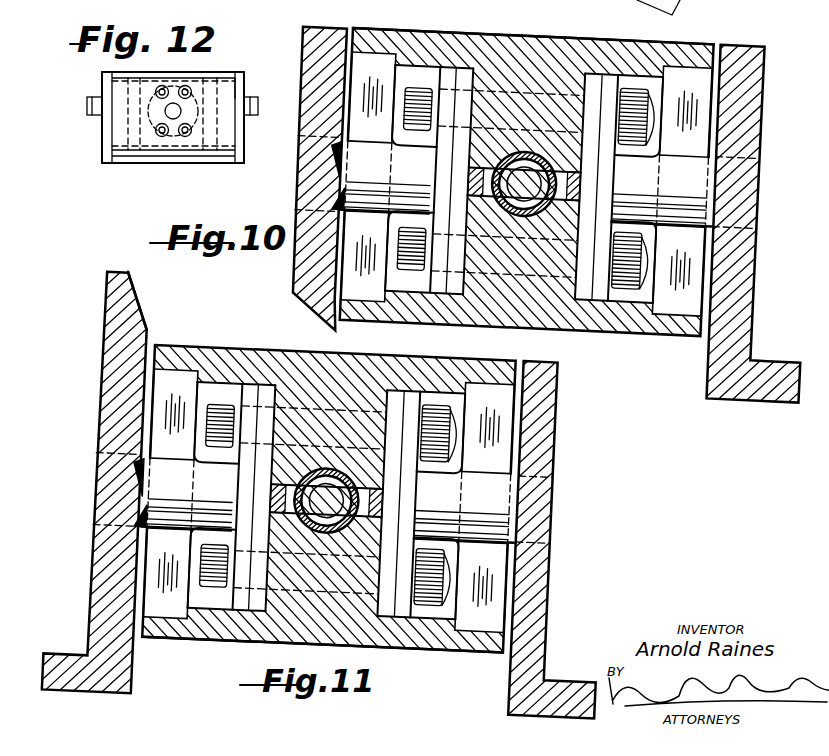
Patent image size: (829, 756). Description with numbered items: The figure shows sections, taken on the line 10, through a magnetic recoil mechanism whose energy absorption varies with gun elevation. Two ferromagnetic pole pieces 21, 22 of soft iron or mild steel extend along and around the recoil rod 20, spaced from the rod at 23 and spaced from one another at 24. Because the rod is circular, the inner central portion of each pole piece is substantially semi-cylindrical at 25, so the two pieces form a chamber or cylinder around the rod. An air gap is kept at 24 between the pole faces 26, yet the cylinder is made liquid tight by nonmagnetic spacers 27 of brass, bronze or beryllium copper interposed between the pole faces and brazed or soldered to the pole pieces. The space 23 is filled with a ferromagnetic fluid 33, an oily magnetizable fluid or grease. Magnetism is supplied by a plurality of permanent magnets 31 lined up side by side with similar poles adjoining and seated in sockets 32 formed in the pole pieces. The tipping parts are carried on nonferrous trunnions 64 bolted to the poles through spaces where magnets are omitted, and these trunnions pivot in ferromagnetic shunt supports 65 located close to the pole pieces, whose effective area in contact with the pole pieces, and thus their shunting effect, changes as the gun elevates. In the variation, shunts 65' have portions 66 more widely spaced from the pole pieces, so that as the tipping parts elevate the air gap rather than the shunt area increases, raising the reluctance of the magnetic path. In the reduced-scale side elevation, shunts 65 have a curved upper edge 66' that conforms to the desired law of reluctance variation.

In FIG. 10, the section line 10 is at (416, 13).
In FIG. 10, the rod 20 is at (524, 184).
In FIG. 11, the rod 20 is at (326, 500).
In FIG. 12, the rod 20 is at (90, 100).
In FIG. 10, the pole piece 21 is at (525, 197).
In FIG. 11, the pole piece 21 is at (329, 486).
In FIG. 10, the pole piece 22 is at (534, 24).
In FIG. 11, the pole piece 22 is at (322, 663).
In FIG. 10, the space between rod and pole pieces 23 is at (544, 114).
In FIG. 11, the space between rod and pole pieces 23 is at (337, 432).
In FIG. 10, the air gap 24 is at (589, 187).
In FIG. 11, the air gap 24 is at (410, 504).
In FIG. 10, the semi-cylindrical inner portion 25 is at (453, 180).
In FIG. 11, the semi-cylindrical inner portion 25 is at (252, 497).
In FIG. 10, the pole faces 26 is at (412, 179).
In FIG. 11, the pole faces 26 is at (303, 499).
In FIG. 10, the spacers 27 is at (458, 183).
In FIG. 11, the spacers 27 is at (247, 497).
In FIG. 10, the permanent magnets 31 is at (346, 85).
In FIG. 11, the permanent magnets 31 is at (366, 473).
In FIG. 10, the sockets 32 is at (682, 158).
In FIG. 11, the sockets 32 is at (508, 524).
In FIG. 10, the ferromagnetic fluid 33 is at (609, 187).
In FIG. 11, the ferromagnetic fluid 33 is at (309, 499).
In FIG. 10, the trunnions 64 is at (522, 183).
In FIG. 11, the trunnions 64 is at (324, 500).
In FIG. 12, the trunnions 64 is at (172, 119).
In FIG. 10, the shunt supports 65 is at (535, 213).
In FIG. 12, the shunt supports 65 is at (182, 117).
In FIG. 11, the shunts 65' is at (95, 483).
In FIG. 11, the spaced portions 66 is at (153, 299).
In FIG. 12, the curved upper edge 66' is at (227, 66).